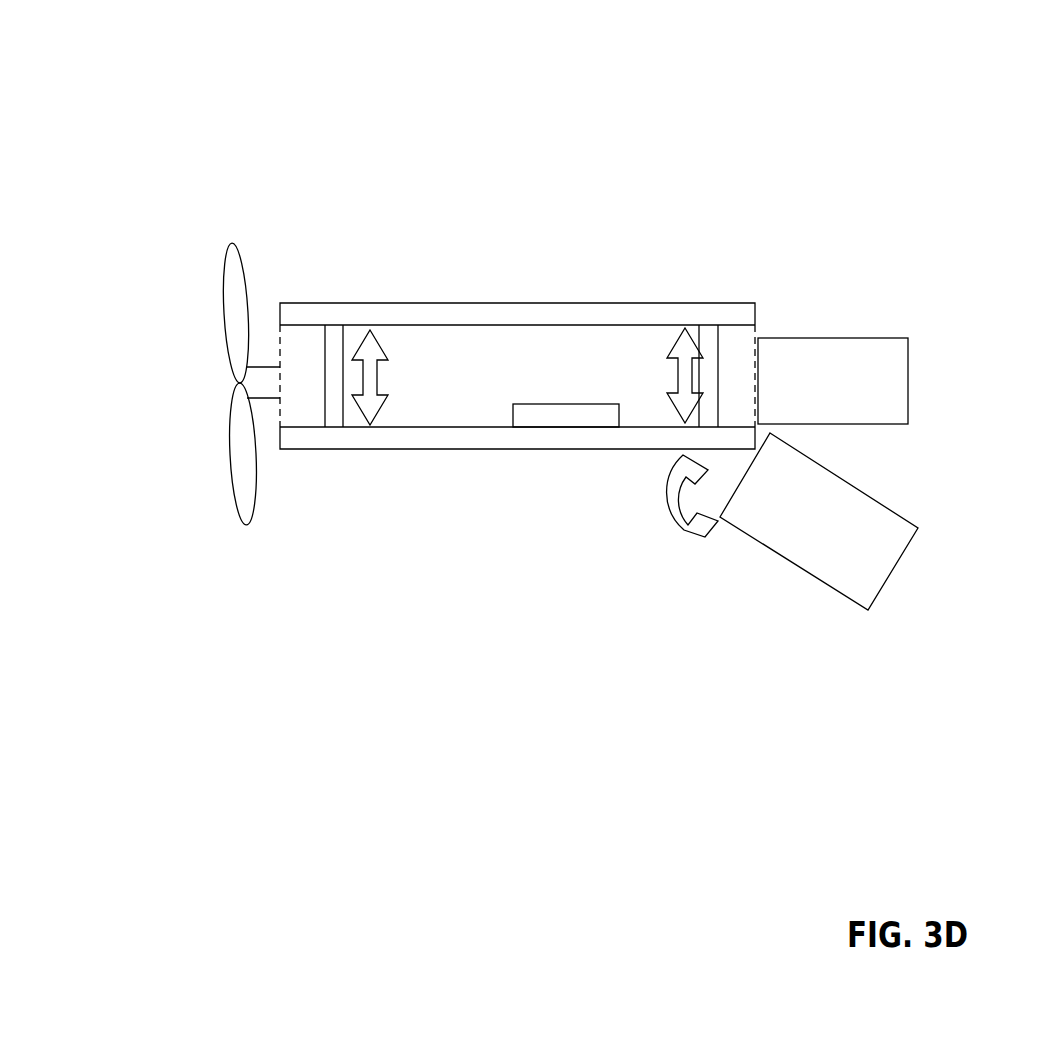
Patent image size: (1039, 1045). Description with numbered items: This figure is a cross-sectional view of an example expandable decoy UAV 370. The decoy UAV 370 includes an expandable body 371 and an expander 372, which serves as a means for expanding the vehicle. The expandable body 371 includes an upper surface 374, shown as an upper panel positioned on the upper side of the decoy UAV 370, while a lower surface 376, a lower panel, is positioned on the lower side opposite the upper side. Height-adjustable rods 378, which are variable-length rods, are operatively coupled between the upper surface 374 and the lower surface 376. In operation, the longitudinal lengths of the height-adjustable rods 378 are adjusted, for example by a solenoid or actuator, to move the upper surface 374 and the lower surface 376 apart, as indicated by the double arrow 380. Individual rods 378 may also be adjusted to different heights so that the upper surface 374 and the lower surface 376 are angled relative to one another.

The decoy UAV 370 is at (122, 67).
The expandable body 371 is at (240, 147).
The expander 372 is at (330, 285).
The upper surface 374 is at (528, 302).
The lower surface 376 is at (528, 449).
The height-adjustable rods 378 is at (333, 413).
The double arrow 380 is at (371, 410).